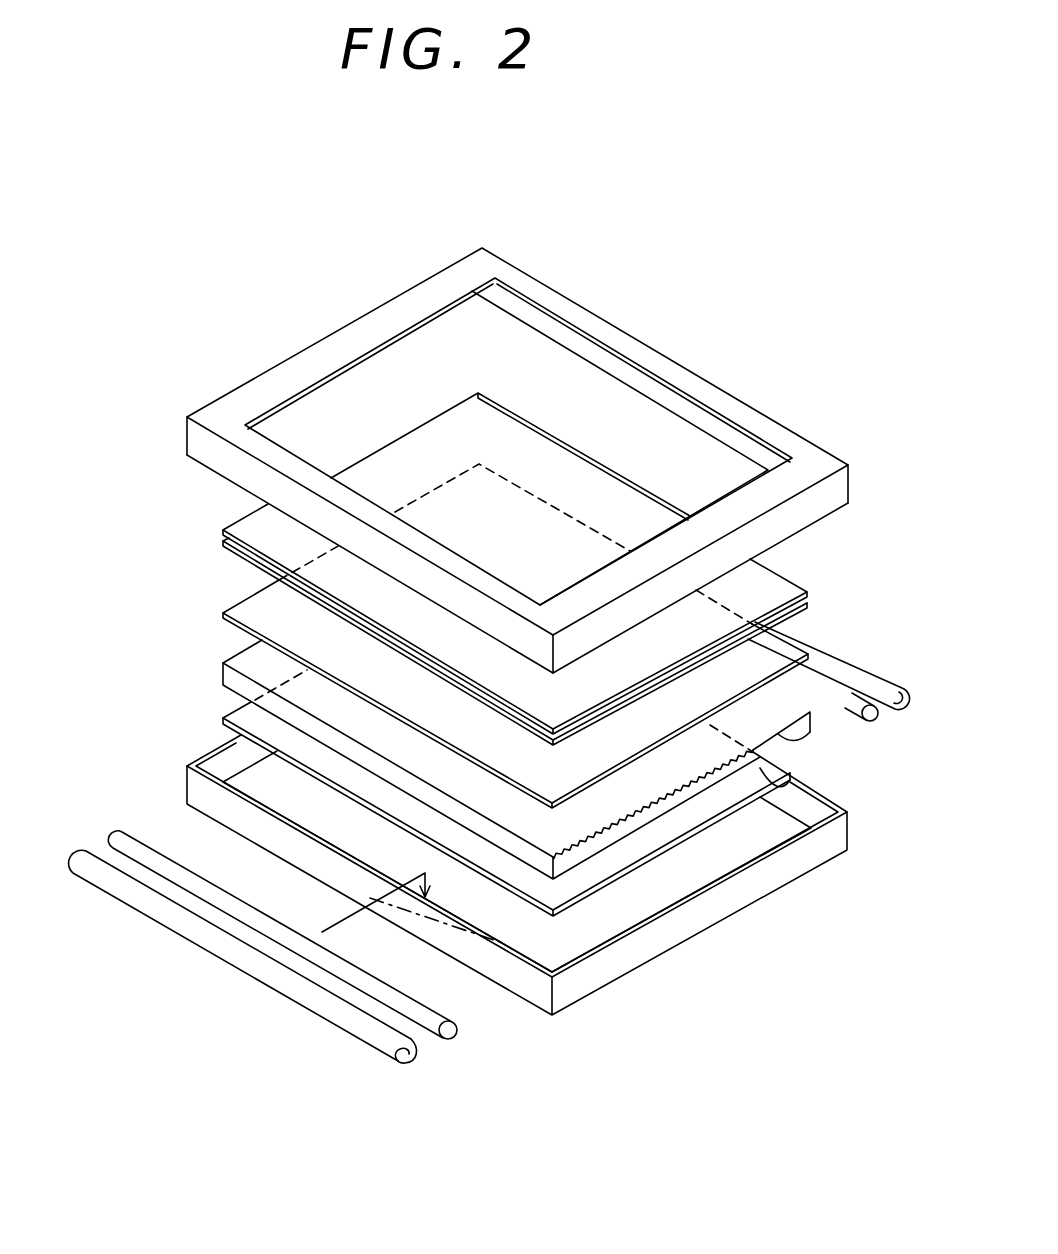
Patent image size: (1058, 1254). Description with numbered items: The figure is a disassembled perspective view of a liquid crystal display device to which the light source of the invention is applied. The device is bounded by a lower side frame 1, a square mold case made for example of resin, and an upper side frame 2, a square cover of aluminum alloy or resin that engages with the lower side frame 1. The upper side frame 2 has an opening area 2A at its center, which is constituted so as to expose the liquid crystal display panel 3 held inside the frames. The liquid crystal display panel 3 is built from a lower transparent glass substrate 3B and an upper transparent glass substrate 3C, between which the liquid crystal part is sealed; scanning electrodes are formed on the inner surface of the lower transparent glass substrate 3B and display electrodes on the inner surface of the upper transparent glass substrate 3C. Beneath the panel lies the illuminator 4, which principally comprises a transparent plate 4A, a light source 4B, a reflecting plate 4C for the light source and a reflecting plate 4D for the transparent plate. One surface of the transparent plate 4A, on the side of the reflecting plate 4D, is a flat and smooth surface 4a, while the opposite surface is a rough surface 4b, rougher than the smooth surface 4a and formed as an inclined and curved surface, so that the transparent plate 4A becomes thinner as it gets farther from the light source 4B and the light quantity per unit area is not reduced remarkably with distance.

The lower side frame 1 is at (678, 928).
The upper side frame 2 is at (835, 490).
The opening area 2A is at (348, 405).
The liquid crystal display panel 3 is at (581, 624).
The lower transparent glass substrate 3B is at (790, 615).
The upper transparent glass substrate 3C is at (767, 590).
The illuminator 4 is at (492, 845).
The transparent plate 4A is at (514, 753).
The reflecting plate for transparent plate 4D is at (514, 789).
The light source 4B is at (155, 853).
The reflecting plate for light source 4C is at (243, 899).
The smooth surface 4a is at (793, 784).
The rough surface 4b is at (790, 731).